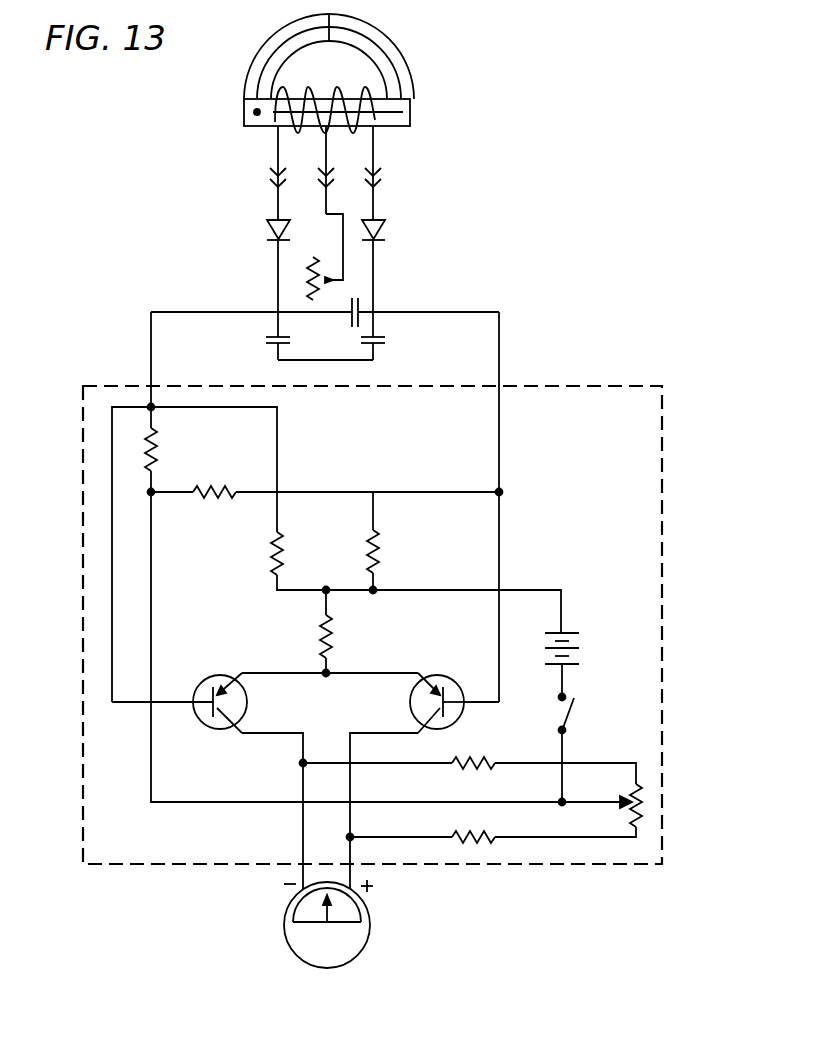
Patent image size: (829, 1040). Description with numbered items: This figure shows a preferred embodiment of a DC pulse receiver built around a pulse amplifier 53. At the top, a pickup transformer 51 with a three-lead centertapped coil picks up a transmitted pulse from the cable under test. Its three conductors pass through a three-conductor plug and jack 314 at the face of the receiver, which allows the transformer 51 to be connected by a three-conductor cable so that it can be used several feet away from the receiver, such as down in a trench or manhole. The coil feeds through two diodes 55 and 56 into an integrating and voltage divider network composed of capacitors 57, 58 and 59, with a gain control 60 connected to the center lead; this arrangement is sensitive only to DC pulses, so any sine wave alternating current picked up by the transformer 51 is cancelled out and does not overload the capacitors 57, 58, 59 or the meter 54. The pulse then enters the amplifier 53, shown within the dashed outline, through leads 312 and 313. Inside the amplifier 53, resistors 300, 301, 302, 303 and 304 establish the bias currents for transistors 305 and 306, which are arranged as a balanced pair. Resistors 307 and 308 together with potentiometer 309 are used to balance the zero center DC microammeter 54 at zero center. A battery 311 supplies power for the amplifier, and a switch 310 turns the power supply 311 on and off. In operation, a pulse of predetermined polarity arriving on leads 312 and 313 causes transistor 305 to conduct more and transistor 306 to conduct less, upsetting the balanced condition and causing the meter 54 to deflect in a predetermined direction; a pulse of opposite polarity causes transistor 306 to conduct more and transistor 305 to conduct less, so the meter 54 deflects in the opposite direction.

The pickup transformer 51 is at (409, 79).
The 3-conductor plug and jack 314 is at (272, 183).
The diode 56 is at (267, 232).
The diode 55 is at (385, 228).
The gain control 60 is at (313, 257).
The capacitor 57 is at (350, 318).
The capacitor 58 is at (385, 337).
The capacitor 59 is at (268, 345).
The lead 312 is at (151, 350).
The lead 313 is at (499, 355).
The pulse amplifier 53 is at (640, 386).
The resistor 300 is at (157, 437).
The resistor 301 is at (243, 462).
The resistor 302 is at (271, 566).
The resistor 303 is at (380, 550).
The resistor 304 is at (335, 632).
The transistor 305 is at (217, 680).
The transistor 306 is at (443, 683).
The resistor 307 is at (460, 770).
The resistor 308 is at (457, 832).
The potentiometer 309 is at (640, 790).
The switch 310 is at (568, 716).
The battery 311 is at (578, 633).
The zero center DC microammeter 54 is at (365, 952).